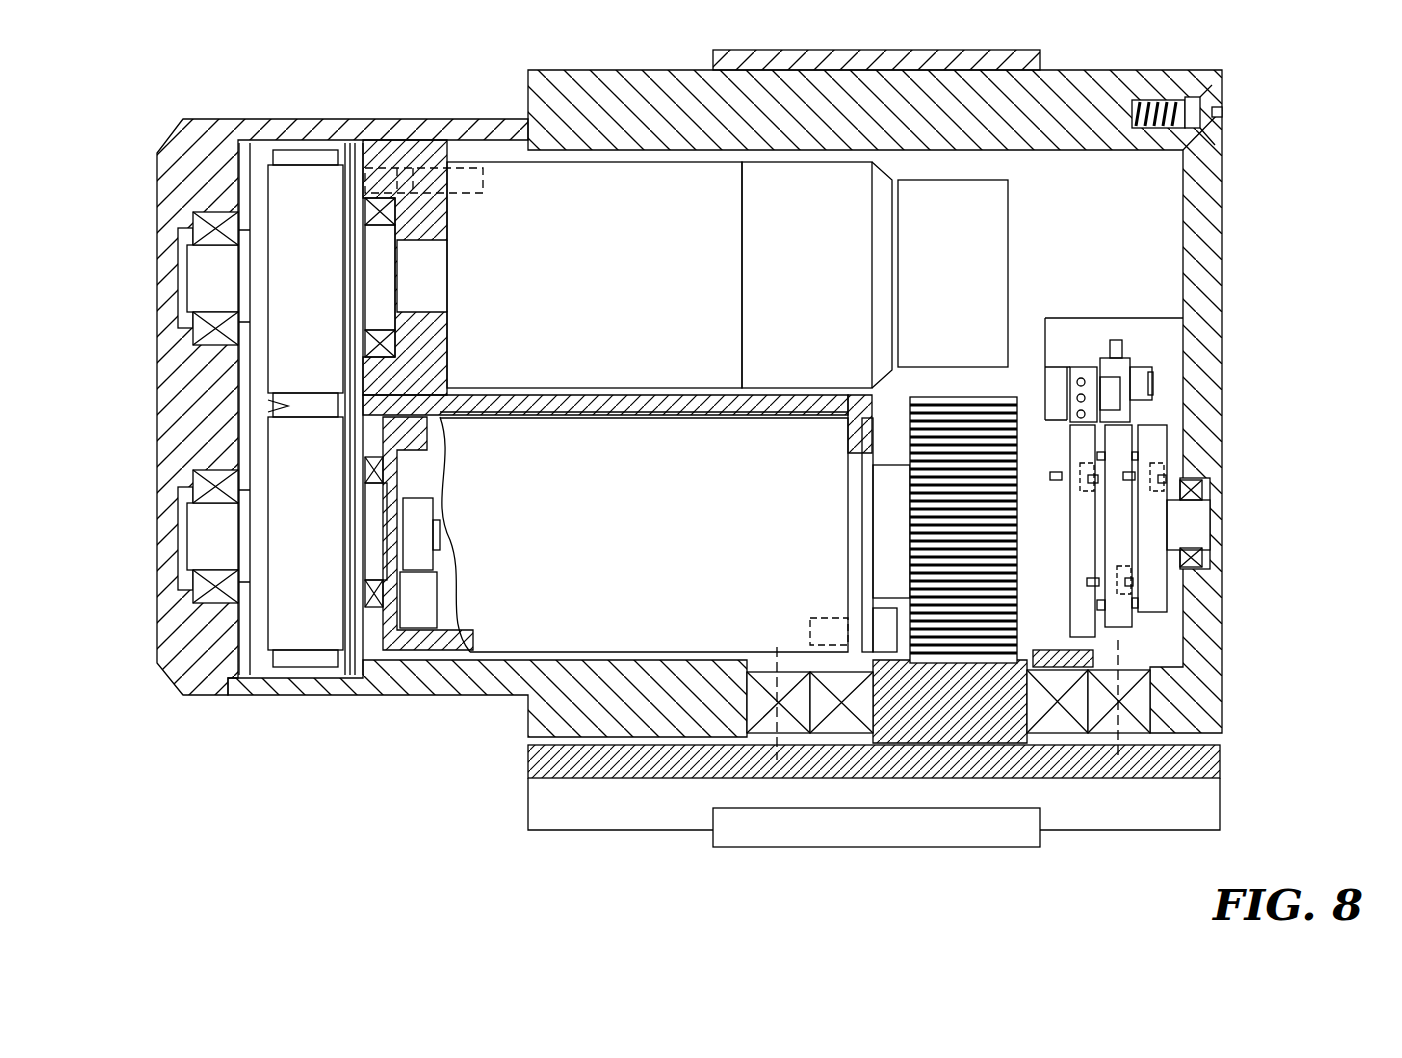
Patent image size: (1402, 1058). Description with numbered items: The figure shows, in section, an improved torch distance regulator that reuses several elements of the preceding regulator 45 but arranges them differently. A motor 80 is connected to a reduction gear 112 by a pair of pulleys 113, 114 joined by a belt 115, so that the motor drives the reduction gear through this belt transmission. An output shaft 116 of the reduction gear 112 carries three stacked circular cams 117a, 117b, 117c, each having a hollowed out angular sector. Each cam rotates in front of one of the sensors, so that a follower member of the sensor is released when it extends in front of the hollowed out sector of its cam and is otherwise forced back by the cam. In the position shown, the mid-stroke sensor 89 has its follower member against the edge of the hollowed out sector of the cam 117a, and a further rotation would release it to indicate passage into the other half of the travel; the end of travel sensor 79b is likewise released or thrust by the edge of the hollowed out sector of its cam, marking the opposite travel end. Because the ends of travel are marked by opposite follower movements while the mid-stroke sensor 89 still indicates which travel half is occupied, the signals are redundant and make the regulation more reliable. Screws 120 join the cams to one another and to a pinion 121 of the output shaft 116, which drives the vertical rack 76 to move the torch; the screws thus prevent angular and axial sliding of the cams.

The regulator 45 is at (1243, 98).
The vertical rack 76 is at (1000, 738).
The end of travel sensor 79b is at (1128, 360).
The motor 80 is at (503, 183).
The mid-stroke sensor 89 is at (1072, 377).
The reduction gear 112 is at (498, 640).
The pulley 113 is at (312, 170).
The pulley 114 is at (294, 635).
The belt 115 is at (288, 404).
The output shaft 116 is at (888, 495).
The circular cam 117a is at (1088, 625).
The circular cam 117b is at (1125, 625).
The circular cam 117c is at (1163, 607).
The screws 120 is at (1152, 464).
The pinion 121 is at (956, 413).